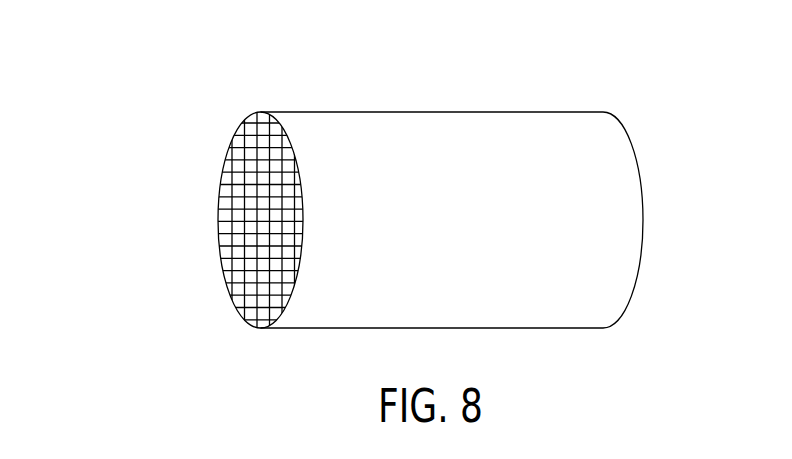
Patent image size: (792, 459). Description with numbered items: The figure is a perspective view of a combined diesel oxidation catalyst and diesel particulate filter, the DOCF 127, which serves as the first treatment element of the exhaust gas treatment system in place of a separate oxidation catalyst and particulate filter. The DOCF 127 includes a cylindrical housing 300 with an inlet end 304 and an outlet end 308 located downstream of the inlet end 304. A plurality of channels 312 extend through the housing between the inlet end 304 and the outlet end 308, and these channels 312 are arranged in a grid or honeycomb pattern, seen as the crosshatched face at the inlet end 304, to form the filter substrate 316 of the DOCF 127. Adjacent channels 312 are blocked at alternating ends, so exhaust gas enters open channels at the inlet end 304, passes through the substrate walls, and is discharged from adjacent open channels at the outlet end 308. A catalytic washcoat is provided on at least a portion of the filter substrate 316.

The cylindrical housing 300 is at (430, 112).
The combined diesel oxidation catalyst and diesel particulate filter (DOCF) 127 is at (595, 158).
The outlet end 308 is at (643, 218).
The inlet end 304 is at (218, 220).
The channels 312 is at (268, 270).
The filter substrate 316 is at (213, 145).